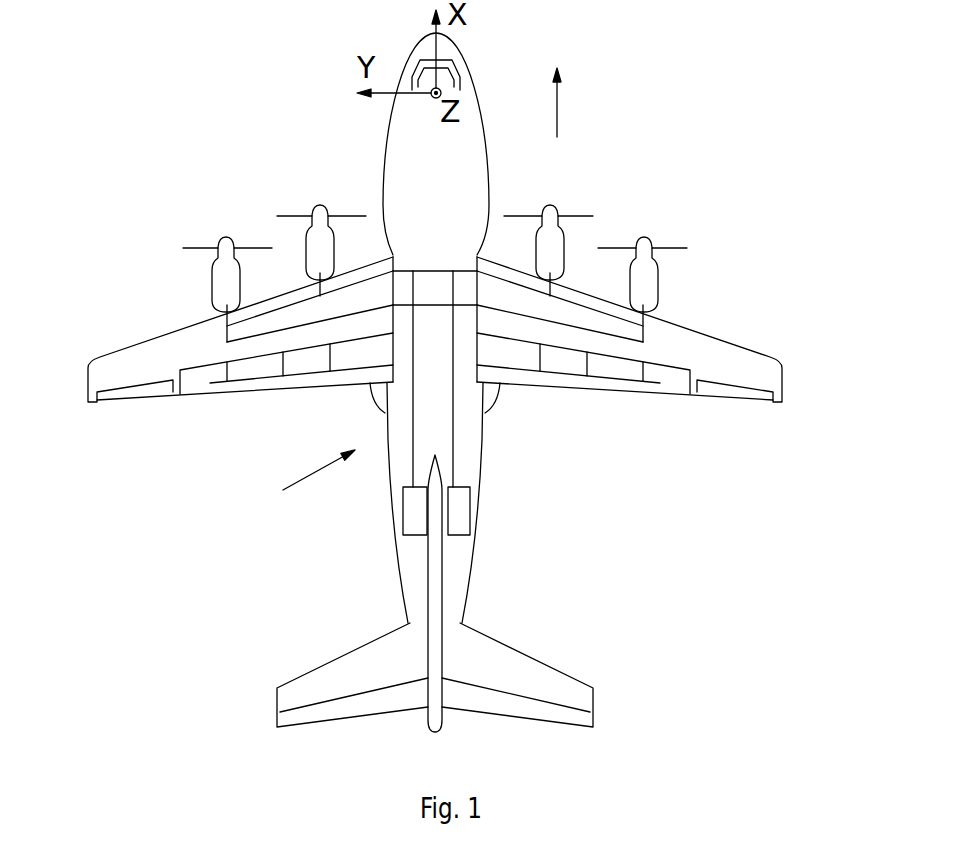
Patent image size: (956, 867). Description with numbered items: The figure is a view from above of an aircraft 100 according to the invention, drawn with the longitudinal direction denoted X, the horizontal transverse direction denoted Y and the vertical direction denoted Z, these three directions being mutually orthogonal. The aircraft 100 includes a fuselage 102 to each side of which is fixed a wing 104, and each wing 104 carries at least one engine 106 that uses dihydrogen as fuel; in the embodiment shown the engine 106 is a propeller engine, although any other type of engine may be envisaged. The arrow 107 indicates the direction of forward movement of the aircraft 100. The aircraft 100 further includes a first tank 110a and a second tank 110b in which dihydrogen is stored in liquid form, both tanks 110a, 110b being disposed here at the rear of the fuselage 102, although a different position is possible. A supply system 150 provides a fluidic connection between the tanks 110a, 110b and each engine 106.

The aircraft 100 is at (682, 112).
The fuselage 102 is at (457, 580).
The wing 104 is at (752, 370).
The engine 106 is at (646, 277).
The arrow 107 is at (587, 104).
The first tank 110a is at (415, 528).
The second tank 110b is at (467, 508).
The supply system 150 is at (291, 481).